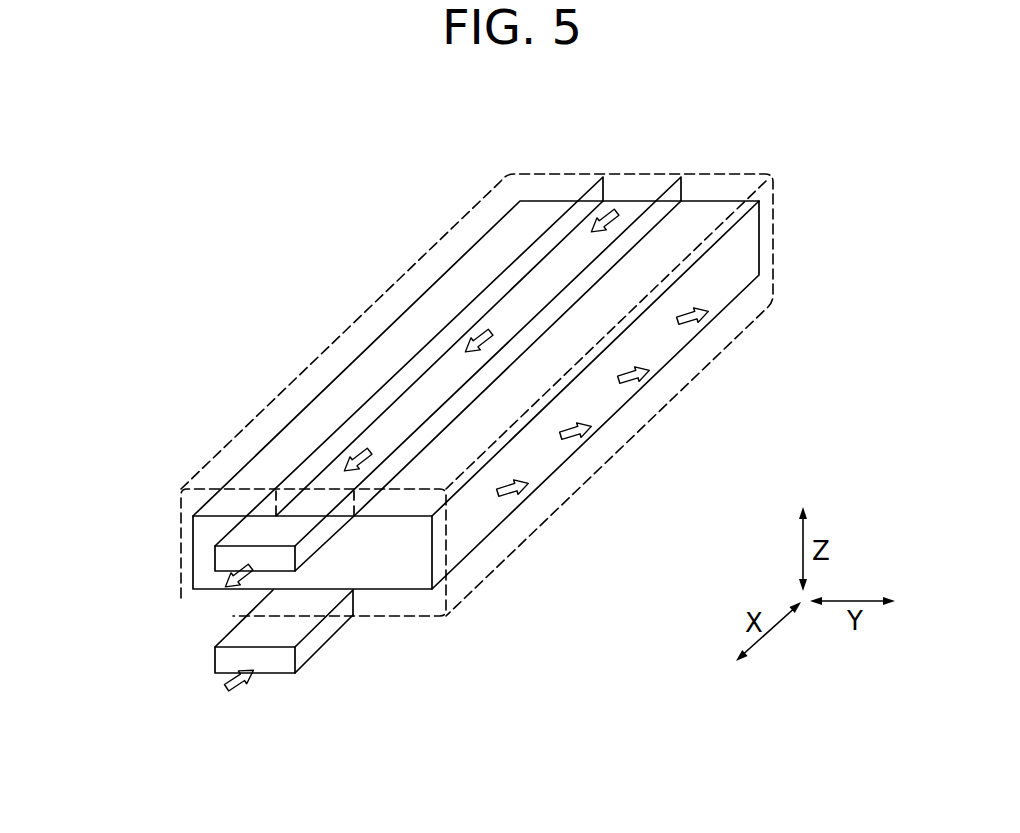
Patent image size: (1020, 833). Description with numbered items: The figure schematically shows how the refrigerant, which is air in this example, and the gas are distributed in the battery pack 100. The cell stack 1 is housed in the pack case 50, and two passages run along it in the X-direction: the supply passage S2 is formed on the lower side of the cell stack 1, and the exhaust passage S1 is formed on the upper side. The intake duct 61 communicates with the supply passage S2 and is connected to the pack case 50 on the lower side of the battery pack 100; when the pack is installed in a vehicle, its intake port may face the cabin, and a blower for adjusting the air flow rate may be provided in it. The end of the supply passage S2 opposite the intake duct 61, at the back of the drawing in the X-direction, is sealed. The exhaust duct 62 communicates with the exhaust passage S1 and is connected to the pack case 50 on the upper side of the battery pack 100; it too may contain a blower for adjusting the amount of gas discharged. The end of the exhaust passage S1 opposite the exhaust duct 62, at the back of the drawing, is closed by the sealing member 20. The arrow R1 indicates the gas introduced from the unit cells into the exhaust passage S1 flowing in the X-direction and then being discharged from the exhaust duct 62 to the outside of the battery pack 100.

The battery pack 100 is at (345, 276).
The cell stack 1 is at (282, 416).
The sealing member 20 is at (636, 187).
The pack case 50 is at (624, 447).
The intake duct 61 is at (313, 648).
The exhaust duct 62 is at (240, 540).
The exhaust passage S1 is at (508, 282).
The supply passage S2 is at (362, 601).
The arrow indicating gas flow R1 is at (345, 450).